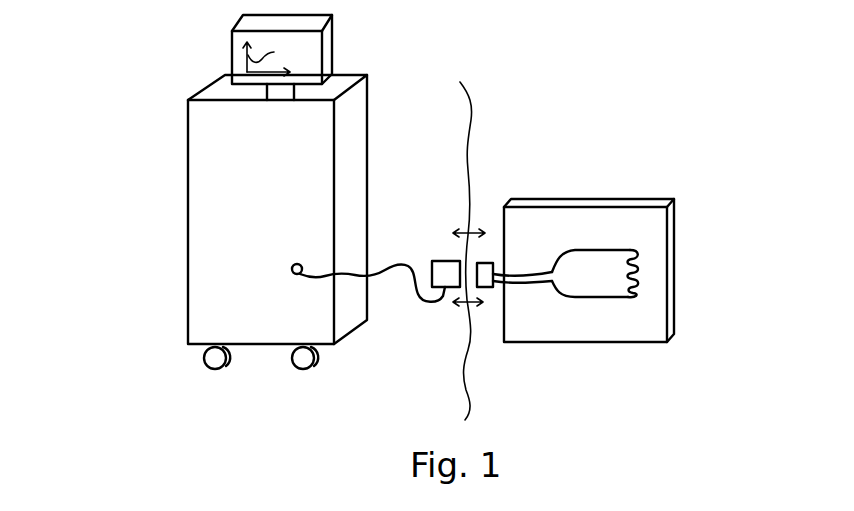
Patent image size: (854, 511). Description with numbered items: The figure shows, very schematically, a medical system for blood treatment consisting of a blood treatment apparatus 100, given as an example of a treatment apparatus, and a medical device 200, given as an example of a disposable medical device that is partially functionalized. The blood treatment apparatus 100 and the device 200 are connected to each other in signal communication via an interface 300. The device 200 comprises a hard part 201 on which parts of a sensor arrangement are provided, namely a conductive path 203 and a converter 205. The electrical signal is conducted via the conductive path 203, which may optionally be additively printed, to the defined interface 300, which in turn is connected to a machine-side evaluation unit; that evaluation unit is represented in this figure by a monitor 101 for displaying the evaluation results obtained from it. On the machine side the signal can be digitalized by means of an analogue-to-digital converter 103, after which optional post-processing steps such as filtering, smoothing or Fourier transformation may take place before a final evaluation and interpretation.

The blood treatment apparatus 100 is at (143, 250).
The monitor 101 is at (300, 49).
The AD converter 103 is at (449, 273).
The medical device 200 is at (643, 140).
The hard part 201 is at (676, 246).
The conductive path 203 is at (575, 298).
The converter 205 is at (637, 292).
The interface 300 is at (472, 233).